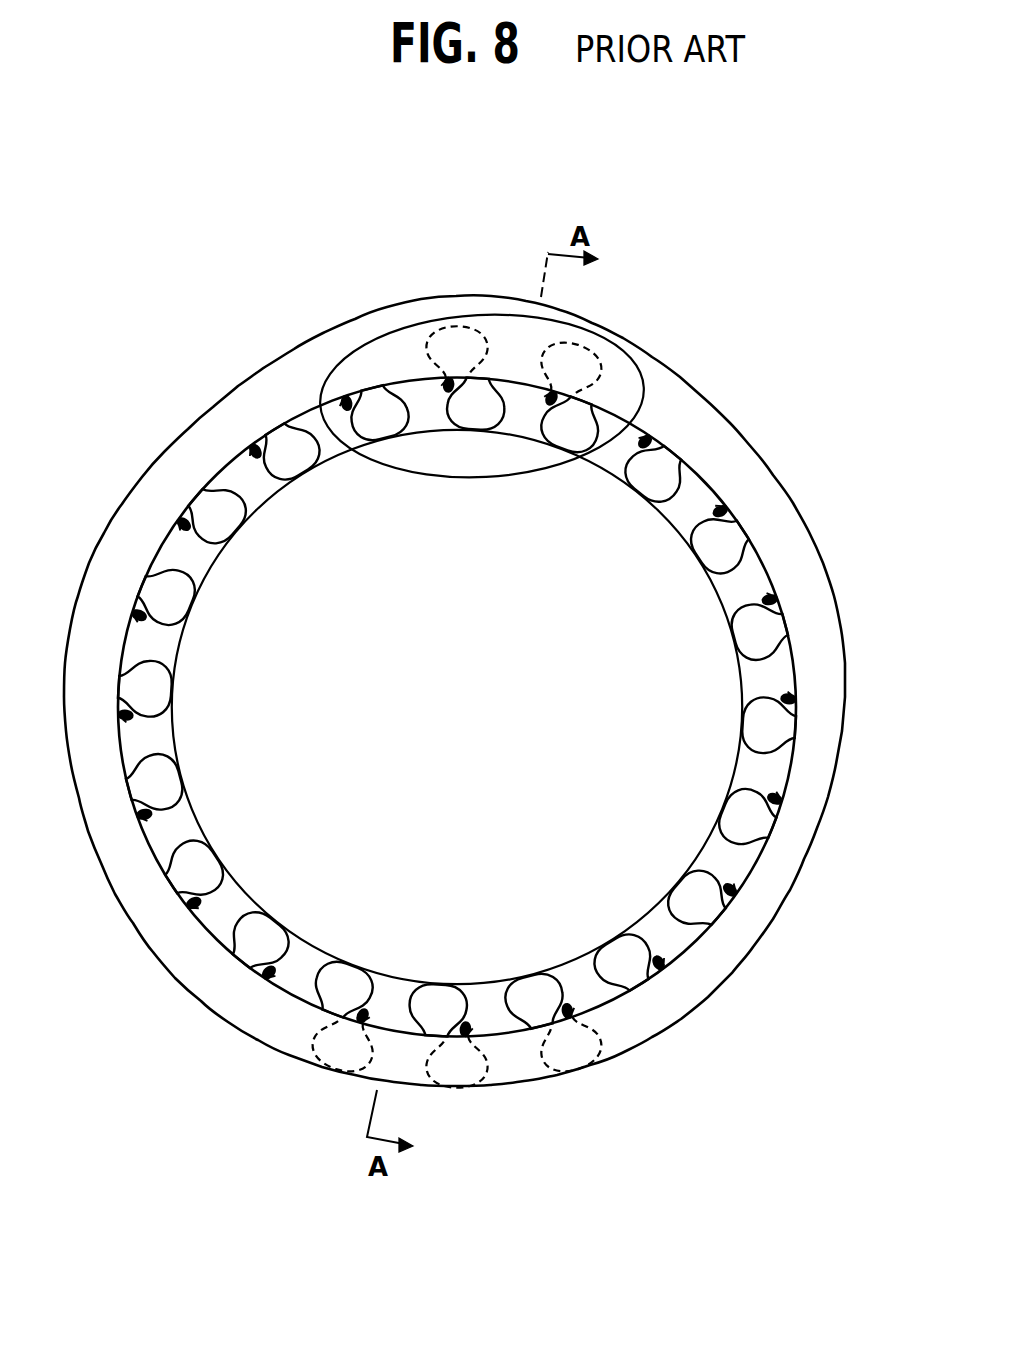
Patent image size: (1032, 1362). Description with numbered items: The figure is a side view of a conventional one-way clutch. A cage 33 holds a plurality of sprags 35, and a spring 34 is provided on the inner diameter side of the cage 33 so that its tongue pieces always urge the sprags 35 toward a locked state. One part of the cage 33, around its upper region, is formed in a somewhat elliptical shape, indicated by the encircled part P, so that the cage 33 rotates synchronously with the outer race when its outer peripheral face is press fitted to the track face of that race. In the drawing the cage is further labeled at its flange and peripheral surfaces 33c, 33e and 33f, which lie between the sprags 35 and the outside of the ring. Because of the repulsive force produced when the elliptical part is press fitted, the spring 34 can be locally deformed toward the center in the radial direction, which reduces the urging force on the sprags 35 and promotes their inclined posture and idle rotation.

The cage 33 is at (683, 378).
The stepped inner portion of ring 33c is at (397, 340).
The outer edge of ring 33e is at (322, 337).
The outer peripheral surface of ring 33f is at (771, 491).
The spring 34 is at (433, 383).
The sprags 35 is at (295, 460).
The encircled part P is at (460, 297).